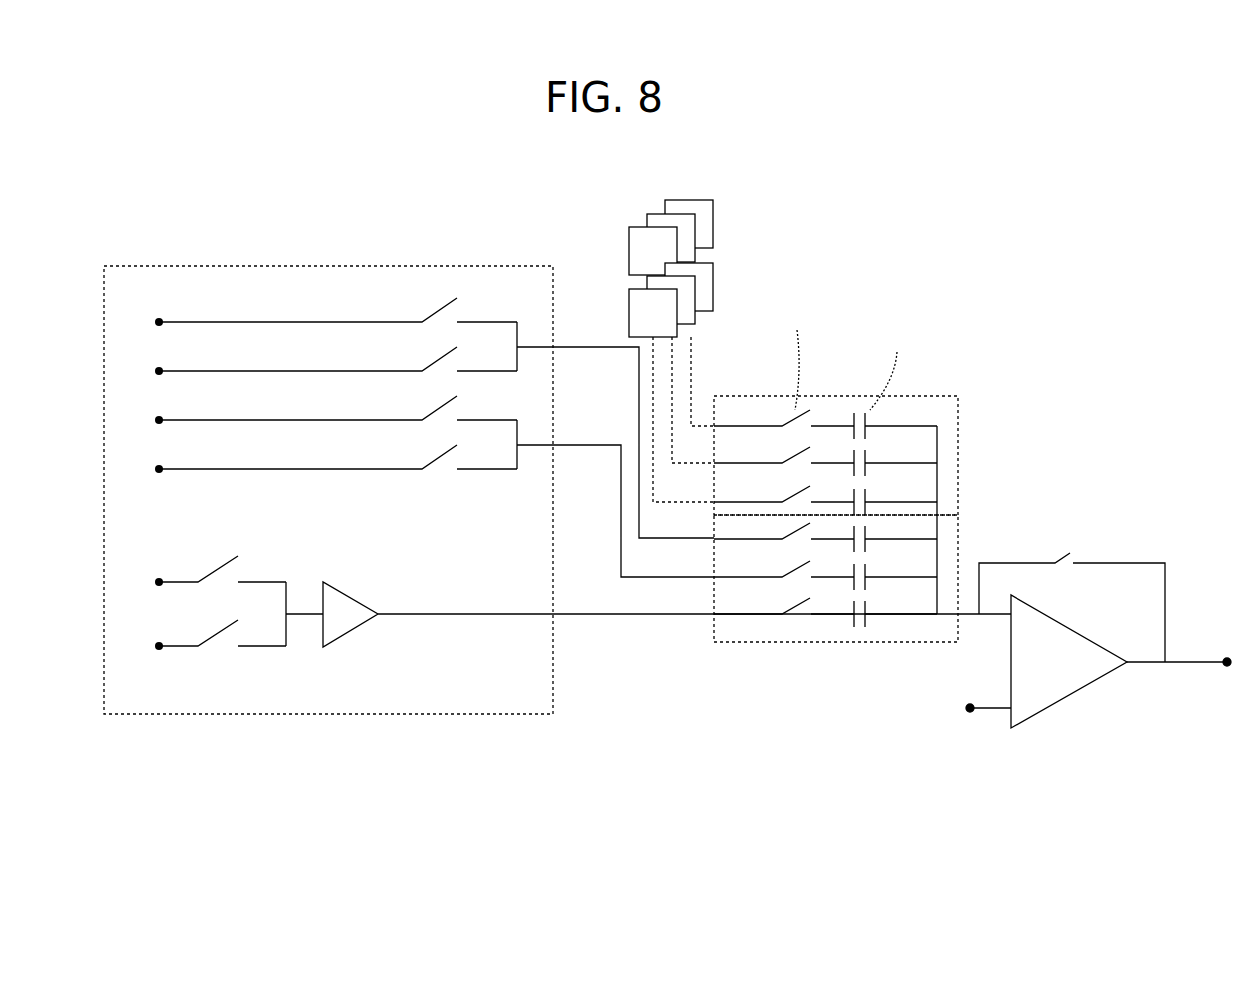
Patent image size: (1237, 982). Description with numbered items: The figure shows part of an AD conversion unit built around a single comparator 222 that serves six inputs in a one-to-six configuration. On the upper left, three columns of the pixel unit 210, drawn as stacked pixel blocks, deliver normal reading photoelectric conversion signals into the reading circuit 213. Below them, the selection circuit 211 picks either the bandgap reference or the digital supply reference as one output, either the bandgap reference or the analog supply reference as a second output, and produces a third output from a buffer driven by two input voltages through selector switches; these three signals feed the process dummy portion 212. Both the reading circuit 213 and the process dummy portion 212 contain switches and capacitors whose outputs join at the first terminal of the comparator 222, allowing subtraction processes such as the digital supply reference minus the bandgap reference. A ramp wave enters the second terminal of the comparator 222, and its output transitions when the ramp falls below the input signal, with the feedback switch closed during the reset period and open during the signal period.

The pixel unit 210 is at (681, 200).
The selection circuit 211 is at (455, 266).
The process dummy portion 212 is at (958, 540).
The reading circuit 213 is at (958, 425).
The comparator 222 is at (1082, 690).